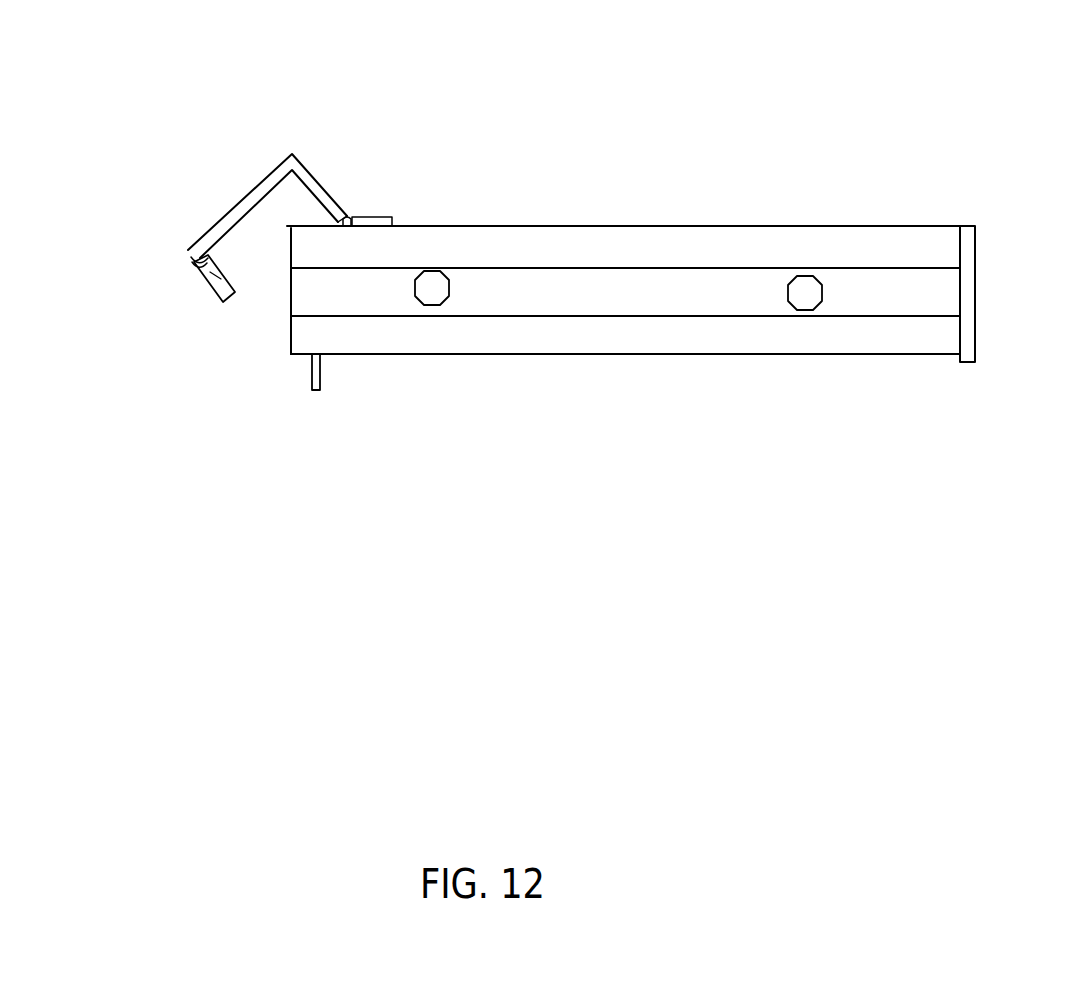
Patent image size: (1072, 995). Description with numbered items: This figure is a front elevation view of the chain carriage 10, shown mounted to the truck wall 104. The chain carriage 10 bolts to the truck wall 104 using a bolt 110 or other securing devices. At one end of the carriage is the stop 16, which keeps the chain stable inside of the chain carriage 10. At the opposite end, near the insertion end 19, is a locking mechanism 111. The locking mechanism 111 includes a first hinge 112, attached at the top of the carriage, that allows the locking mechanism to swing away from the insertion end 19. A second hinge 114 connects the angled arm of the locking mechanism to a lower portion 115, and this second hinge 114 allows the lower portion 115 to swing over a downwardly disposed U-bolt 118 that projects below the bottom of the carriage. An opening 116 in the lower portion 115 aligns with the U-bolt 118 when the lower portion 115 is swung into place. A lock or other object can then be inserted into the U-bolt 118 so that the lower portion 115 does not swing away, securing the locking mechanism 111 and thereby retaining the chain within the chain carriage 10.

The chain carriage 10 is at (610, 424).
The stop 16 is at (975, 310).
The insertion end 19 is at (285, 307).
The truck wall 104 is at (922, 542).
The bolt 110 is at (805, 310).
The locking mechanism 111 is at (342, 127).
The first hinge 112 is at (350, 215).
The second hinge 114 is at (188, 257).
The lower portion 115 is at (222, 302).
The opening 116 is at (205, 290).
The U-bolt 118 is at (315, 392).